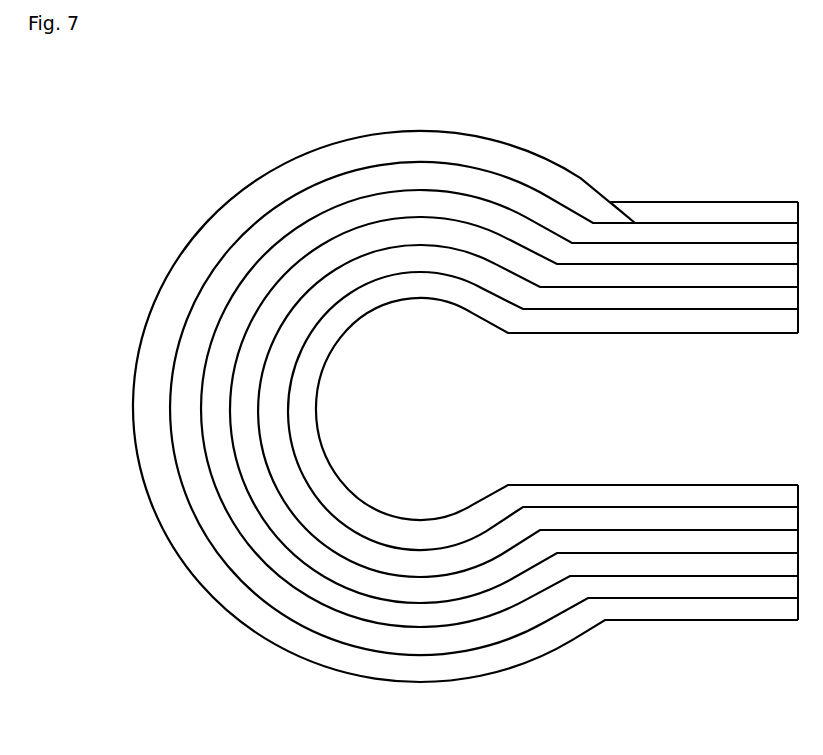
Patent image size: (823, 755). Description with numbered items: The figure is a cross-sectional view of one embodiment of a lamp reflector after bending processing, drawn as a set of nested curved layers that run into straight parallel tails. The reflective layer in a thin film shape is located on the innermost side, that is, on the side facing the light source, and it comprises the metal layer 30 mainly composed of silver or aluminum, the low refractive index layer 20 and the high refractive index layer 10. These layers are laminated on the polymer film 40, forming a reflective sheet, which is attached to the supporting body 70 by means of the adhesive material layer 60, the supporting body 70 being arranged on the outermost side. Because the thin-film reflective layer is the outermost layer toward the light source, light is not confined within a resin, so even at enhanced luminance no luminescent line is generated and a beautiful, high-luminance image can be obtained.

The high refractive index layer 10 is at (343, 314).
The low refractive index layer 20 is at (296, 315).
The metal layer 30 is at (247, 337).
The polymer film 40 is at (212, 421).
The adhesive material layer 60 is at (200, 491).
The supporting body 70 is at (224, 592).